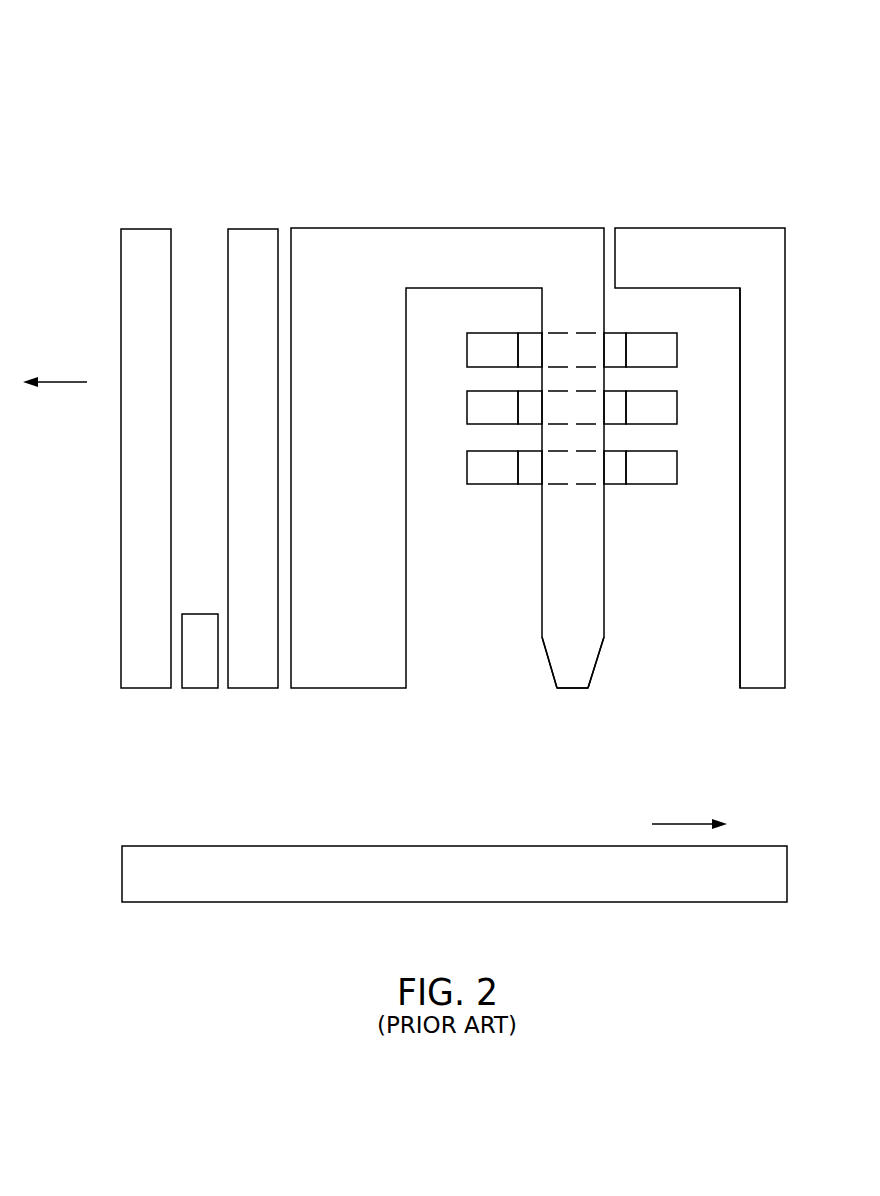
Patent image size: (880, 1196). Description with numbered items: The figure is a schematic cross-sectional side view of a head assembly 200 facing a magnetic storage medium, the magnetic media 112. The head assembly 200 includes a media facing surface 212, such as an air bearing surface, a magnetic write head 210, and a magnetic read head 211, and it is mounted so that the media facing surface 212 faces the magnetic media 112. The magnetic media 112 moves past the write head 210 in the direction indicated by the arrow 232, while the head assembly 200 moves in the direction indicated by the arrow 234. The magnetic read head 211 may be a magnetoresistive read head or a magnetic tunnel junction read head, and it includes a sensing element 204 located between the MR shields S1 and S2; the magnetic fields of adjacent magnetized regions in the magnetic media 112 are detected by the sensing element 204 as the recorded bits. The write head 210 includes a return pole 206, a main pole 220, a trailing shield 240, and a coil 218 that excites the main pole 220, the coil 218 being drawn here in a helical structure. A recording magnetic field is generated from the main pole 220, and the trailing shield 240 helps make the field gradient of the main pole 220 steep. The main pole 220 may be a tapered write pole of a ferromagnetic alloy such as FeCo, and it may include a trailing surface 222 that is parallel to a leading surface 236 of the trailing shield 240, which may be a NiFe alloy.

The head assembly 200 is at (140, 80).
The magnetic read head 211 is at (280, 204).
The magnetic write head 210 is at (785, 204).
The MR shield S1 is at (142, 690).
The MR shield S2 is at (258, 690).
The MR sensing element 204 is at (200, 690).
The return pole 206 is at (352, 690).
The media facing surface 212 is at (570, 690).
The coil 218 is at (490, 485).
The main pole 220 is at (550, 656).
The trailing surface 222 is at (603, 615).
The leading surface 236 is at (740, 555).
The trailing shield 240 is at (763, 690).
The arrow 234 is at (68, 382).
The arrow 232 is at (680, 823).
The magnetic media 112 is at (715, 902).